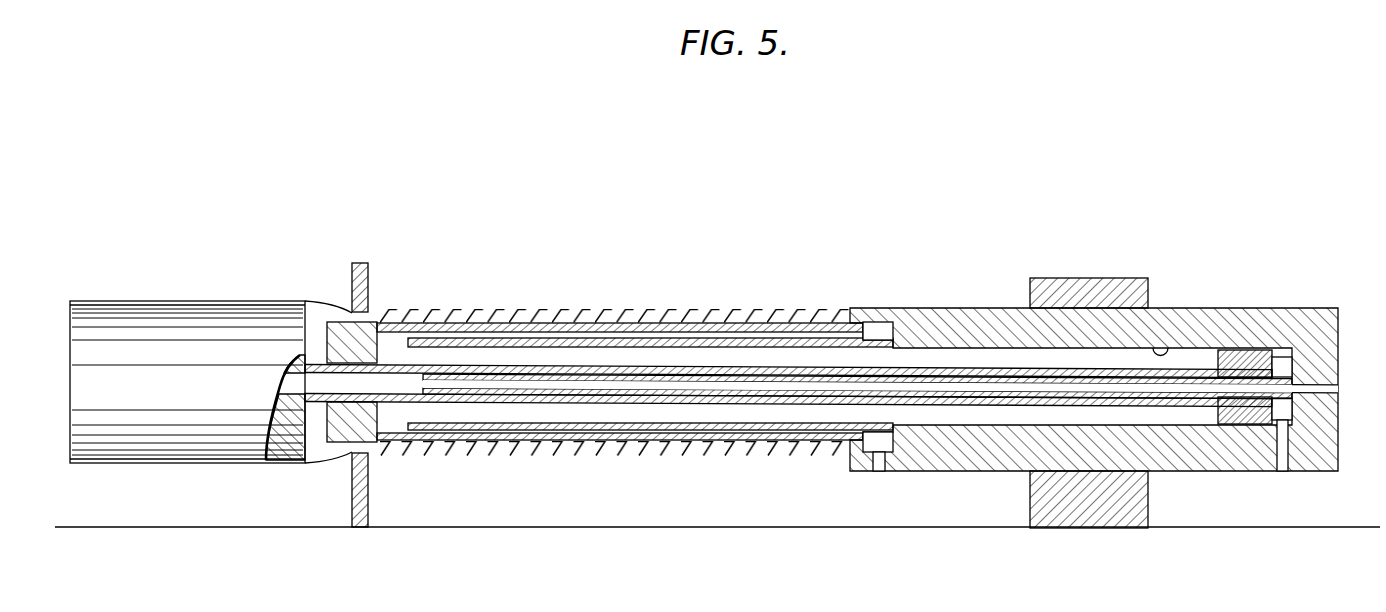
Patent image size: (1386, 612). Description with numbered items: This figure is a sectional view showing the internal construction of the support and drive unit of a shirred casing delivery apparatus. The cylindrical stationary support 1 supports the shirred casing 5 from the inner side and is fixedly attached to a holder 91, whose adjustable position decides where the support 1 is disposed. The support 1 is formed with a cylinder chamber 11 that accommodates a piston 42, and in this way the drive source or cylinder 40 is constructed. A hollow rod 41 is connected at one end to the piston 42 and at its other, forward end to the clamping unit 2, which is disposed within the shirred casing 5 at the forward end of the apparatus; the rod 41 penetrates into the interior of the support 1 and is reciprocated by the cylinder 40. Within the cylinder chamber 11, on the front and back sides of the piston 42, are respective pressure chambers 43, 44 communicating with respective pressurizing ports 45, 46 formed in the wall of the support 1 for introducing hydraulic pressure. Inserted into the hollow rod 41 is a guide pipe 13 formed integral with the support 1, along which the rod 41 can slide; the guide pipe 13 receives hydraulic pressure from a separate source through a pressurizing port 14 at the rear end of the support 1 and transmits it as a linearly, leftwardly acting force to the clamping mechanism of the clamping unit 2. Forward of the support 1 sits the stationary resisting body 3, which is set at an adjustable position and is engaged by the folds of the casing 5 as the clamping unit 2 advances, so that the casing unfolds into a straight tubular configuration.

The stationary support 1 is at (873, 332).
The cylinder 40 is at (873, 332).
The clamping unit 2 is at (238, 318).
The stationary resisting body 3 is at (359, 262).
The shirred casing 5 is at (617, 318).
The cylinder chamber 11 is at (1168, 348).
The guide pipe 13 is at (725, 396).
The pressurizing port 14 is at (1330, 385).
The rod 41 is at (397, 374).
The piston 42 is at (1249, 350).
The pressure chamber 43 is at (958, 413).
The pressure chamber 44 is at (1283, 367).
The pressurizing port 45 is at (880, 469).
The pressurizing port 46 is at (1282, 473).
The holder 91 is at (1088, 278).